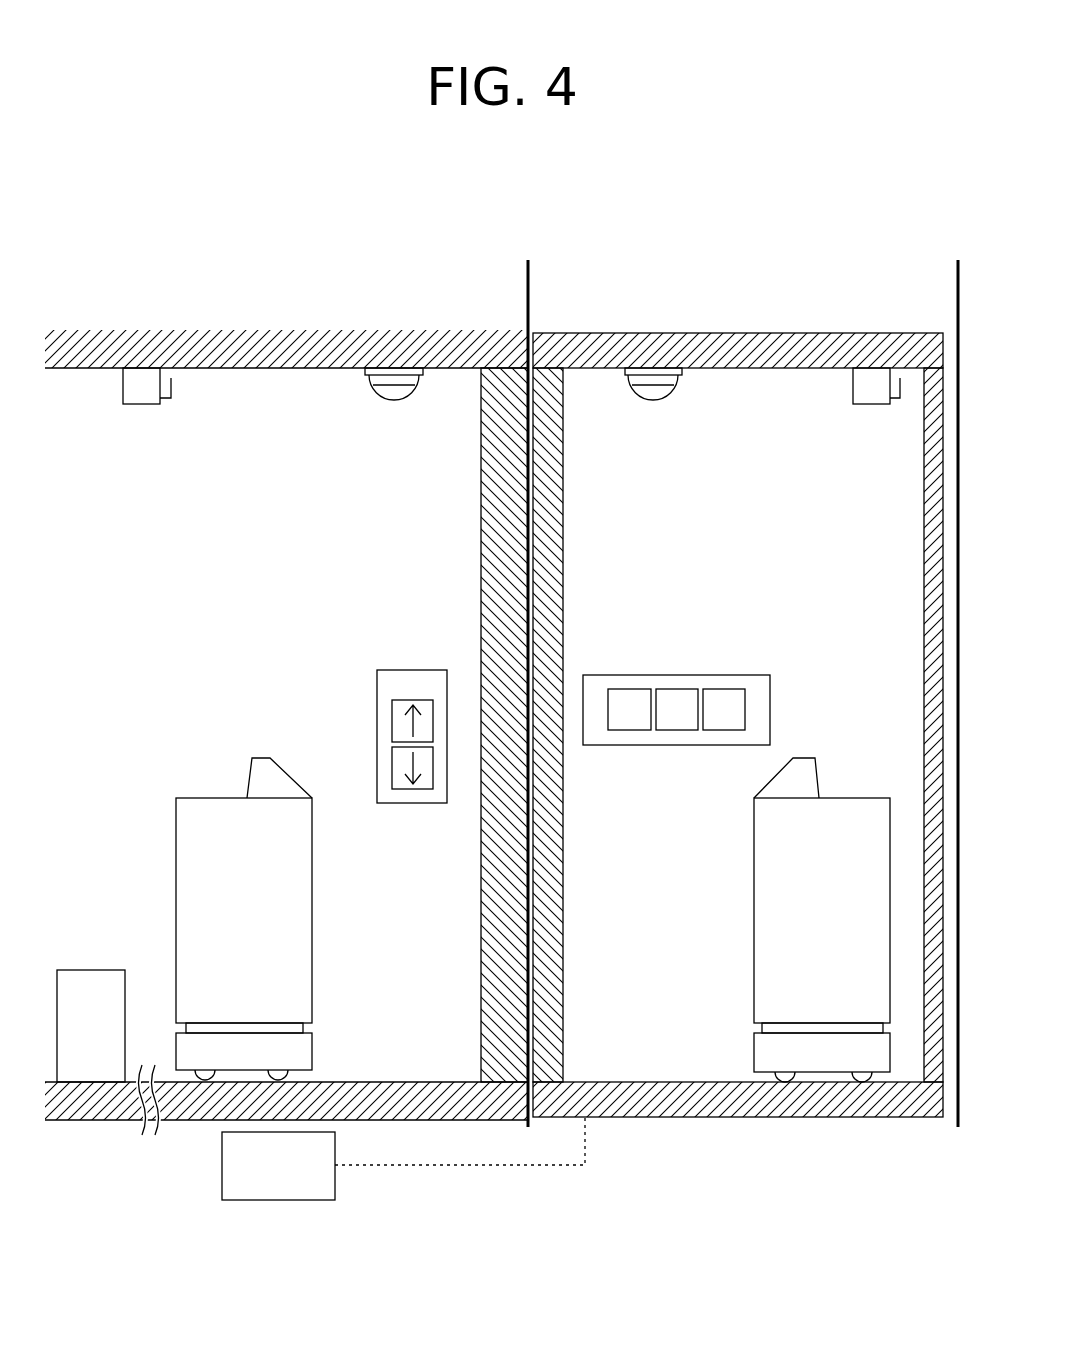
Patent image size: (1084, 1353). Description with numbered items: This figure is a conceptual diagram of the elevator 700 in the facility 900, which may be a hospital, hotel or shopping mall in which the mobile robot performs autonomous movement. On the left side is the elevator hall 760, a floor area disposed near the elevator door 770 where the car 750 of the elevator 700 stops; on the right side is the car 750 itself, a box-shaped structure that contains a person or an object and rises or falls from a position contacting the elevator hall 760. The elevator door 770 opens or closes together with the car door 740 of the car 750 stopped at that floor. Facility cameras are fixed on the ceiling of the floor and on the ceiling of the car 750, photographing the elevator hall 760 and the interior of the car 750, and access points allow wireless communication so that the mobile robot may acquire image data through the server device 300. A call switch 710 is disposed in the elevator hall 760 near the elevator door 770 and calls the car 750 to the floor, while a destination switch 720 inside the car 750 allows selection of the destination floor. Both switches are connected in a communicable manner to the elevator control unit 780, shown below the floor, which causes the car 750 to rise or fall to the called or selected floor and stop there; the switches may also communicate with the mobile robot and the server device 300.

The facility 900 is at (353, 266).
The elevator 700 is at (738, 679).
The car 750 is at (850, 323).
The elevator hall 760 is at (265, 508).
The elevator door 770 is at (481, 478).
The car door 740 is at (563, 475).
The server device 300 is at (105, 970).
The call switch 710 is at (405, 712).
The destination switch 720 is at (663, 675).
The elevator control unit 780 is at (220, 1165).